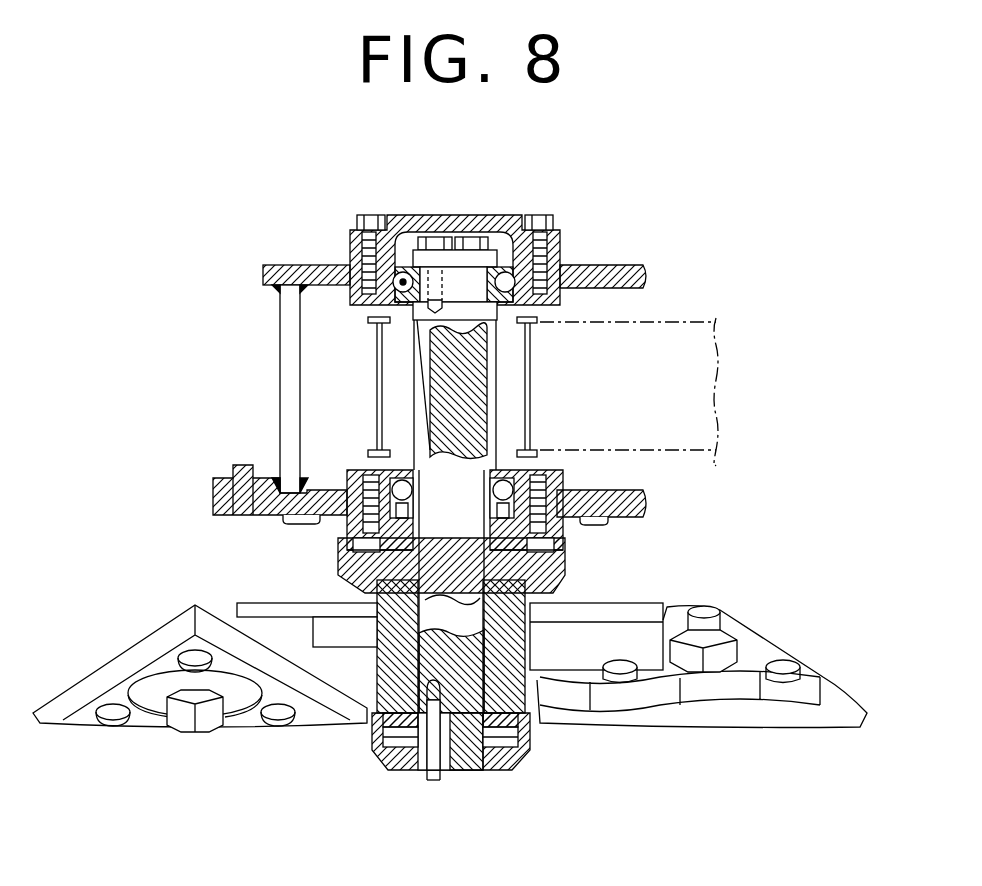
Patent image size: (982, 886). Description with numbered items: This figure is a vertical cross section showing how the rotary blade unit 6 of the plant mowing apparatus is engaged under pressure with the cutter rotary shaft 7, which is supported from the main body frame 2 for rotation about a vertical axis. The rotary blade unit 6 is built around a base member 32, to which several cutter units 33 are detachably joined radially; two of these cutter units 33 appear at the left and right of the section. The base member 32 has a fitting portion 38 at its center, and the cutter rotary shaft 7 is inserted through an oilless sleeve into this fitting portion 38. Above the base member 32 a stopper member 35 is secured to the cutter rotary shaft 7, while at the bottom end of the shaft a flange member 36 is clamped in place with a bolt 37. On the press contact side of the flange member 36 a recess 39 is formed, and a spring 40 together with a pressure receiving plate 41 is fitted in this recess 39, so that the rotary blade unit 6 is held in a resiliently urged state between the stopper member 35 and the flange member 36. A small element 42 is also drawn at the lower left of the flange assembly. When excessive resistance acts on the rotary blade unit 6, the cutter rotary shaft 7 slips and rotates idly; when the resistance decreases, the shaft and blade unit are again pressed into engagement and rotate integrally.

The main body frame 2 is at (583, 272).
The rotary blade unit 6 is at (498, 670).
The cutter rotary shaft 7 is at (455, 444).
The base member 32 is at (640, 640).
The cutter unit 33 is at (138, 720).
The stopper member 35 is at (345, 578).
The flange member 36 is at (465, 772).
The bolt 37 is at (433, 772).
The fitting portion 38 is at (528, 598).
The recess 39 is at (513, 762).
The spring 40 is at (375, 757).
The pressure receiving plate 41 is at (530, 725).
The washer 42 is at (367, 722).